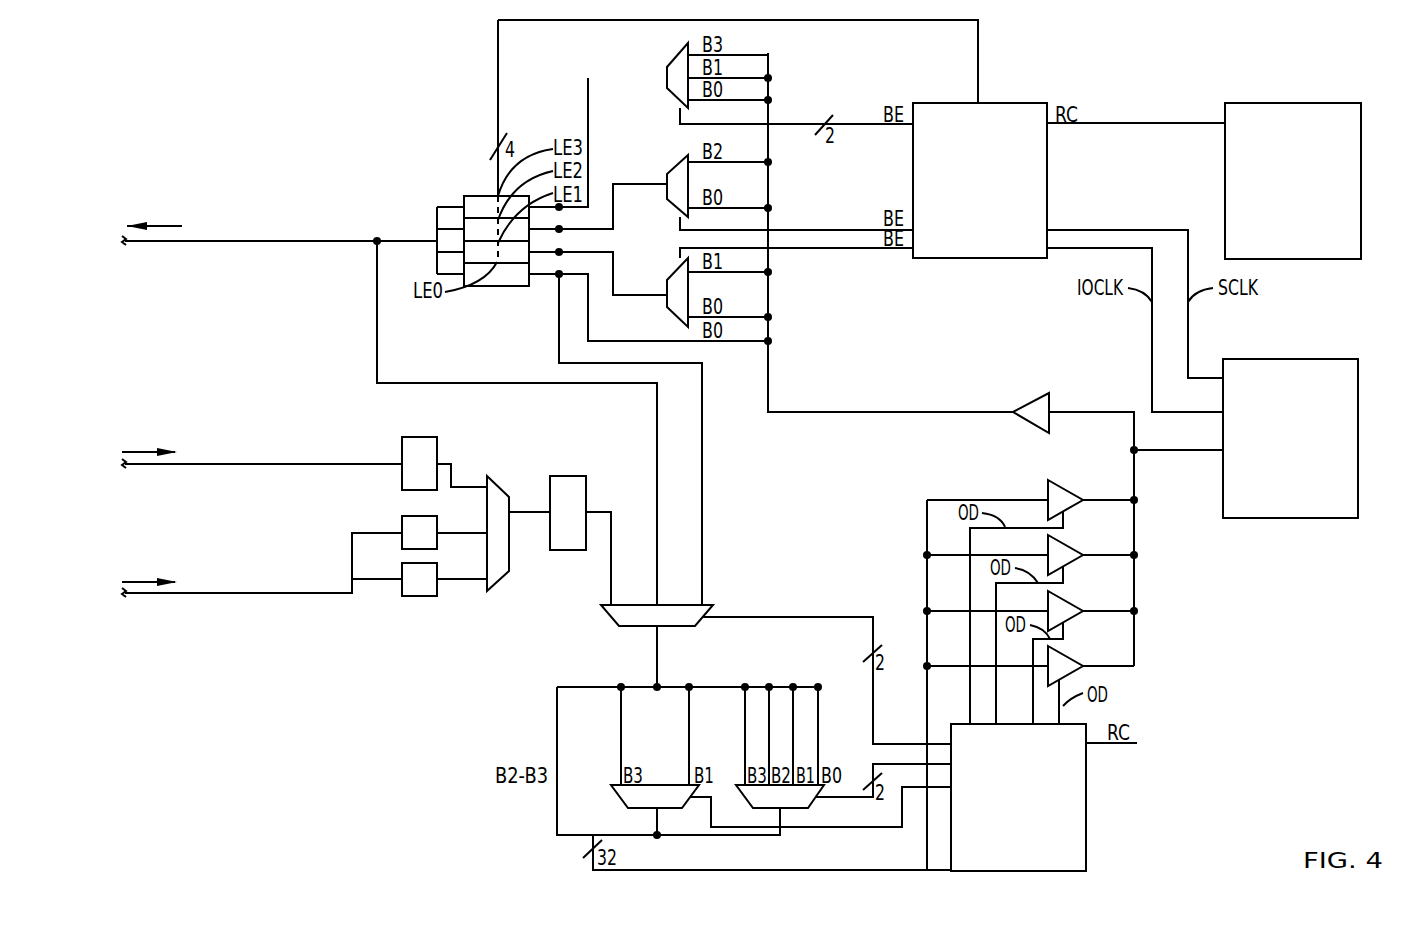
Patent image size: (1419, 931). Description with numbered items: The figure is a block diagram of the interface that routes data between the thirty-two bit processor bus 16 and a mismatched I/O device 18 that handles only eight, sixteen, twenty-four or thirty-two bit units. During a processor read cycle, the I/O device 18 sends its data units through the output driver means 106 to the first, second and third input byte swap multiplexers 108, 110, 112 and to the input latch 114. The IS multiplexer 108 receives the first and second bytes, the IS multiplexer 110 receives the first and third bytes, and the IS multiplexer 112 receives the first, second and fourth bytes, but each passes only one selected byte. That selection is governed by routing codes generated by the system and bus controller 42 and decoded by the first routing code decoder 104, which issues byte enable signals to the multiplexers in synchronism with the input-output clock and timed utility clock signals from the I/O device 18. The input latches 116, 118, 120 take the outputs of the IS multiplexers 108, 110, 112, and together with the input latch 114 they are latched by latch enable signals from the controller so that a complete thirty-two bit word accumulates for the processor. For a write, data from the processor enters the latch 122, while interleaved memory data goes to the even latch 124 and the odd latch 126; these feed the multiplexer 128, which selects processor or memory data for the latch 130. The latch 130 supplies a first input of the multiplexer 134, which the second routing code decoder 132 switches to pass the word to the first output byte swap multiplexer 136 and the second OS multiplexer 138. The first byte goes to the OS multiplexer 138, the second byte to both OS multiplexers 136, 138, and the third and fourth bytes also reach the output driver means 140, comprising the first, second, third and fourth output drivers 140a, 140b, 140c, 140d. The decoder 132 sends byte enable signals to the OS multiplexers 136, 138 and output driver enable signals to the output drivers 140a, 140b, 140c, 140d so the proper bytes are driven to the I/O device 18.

The processor bus 16 is at (1122, 50).
The I/O device 18 is at (1298, 359).
The system and bus controller 42 is at (1298, 103).
The first routing code decoder 104 is at (1010, 103).
The output driver means 106 is at (1040, 398).
The first input byte swap multiplexer 108 is at (678, 270).
The second input byte swap multiplexer 110 is at (678, 164).
The third input byte swap multiplexer 112 is at (686, 52).
The input latch 114 is at (468, 273).
The input latch 116 is at (468, 251).
The input latch 118 is at (468, 228).
The input latch 120 is at (470, 196).
The latch 122 is at (405, 437).
The even latch 124 is at (402, 516).
The odd latch 126 is at (402, 596).
The multiplexer 128 is at (490, 478).
The latch 130 is at (575, 476).
The second routing code decoder 132 is at (1085, 805).
The multiplexer 134 is at (605, 617).
The first output byte swap multiplexer 136 is at (622, 800).
The second output byte swap multiplexer 138 is at (813, 800).
The output driver means 140 is at (1053, 562).
The first output driver 140a is at (1063, 488).
The second output driver 140b is at (1063, 543).
The third output driver 140c is at (1063, 599).
The fourth output driver 140d is at (1063, 654).